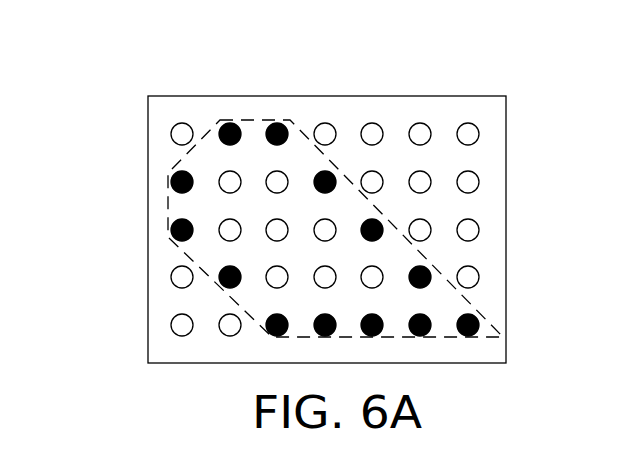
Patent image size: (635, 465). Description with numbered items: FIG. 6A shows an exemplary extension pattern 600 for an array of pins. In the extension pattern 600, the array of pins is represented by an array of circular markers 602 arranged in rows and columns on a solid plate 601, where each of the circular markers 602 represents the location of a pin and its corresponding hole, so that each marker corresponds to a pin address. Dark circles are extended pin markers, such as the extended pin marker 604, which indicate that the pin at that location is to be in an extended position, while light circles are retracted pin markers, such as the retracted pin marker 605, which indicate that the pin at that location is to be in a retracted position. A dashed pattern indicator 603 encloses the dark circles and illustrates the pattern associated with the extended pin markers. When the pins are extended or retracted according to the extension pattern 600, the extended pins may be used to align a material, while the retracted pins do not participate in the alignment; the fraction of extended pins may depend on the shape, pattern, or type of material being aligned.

The extension pattern 600 is at (93, 125).
The solid plate 601 is at (467, 96).
The array of circular markers 602 is at (348, 226).
The pattern indicator 603 is at (253, 120).
The extended pin marker 604 is at (172, 229).
The retracted pin marker 605 is at (178, 277).